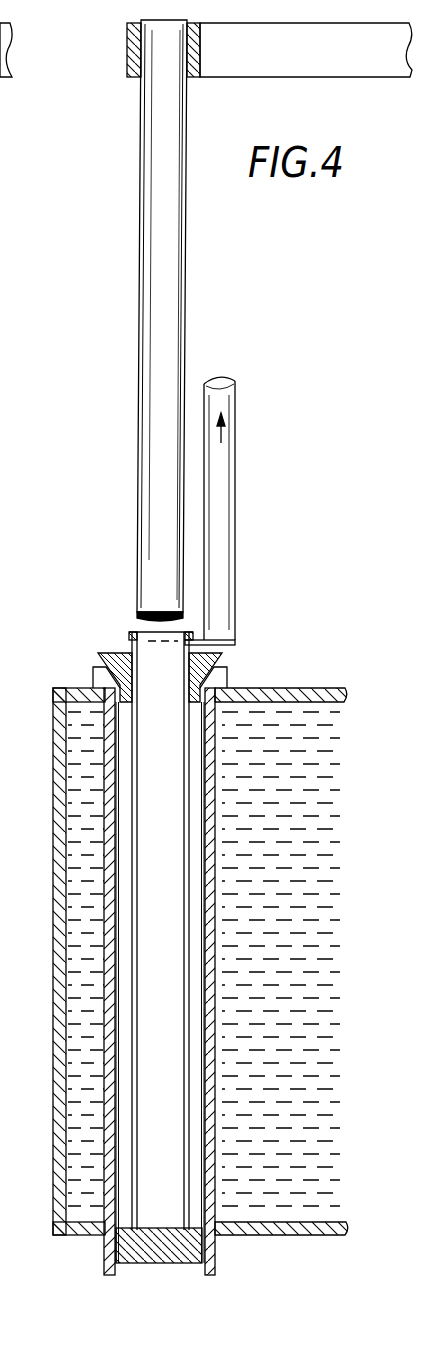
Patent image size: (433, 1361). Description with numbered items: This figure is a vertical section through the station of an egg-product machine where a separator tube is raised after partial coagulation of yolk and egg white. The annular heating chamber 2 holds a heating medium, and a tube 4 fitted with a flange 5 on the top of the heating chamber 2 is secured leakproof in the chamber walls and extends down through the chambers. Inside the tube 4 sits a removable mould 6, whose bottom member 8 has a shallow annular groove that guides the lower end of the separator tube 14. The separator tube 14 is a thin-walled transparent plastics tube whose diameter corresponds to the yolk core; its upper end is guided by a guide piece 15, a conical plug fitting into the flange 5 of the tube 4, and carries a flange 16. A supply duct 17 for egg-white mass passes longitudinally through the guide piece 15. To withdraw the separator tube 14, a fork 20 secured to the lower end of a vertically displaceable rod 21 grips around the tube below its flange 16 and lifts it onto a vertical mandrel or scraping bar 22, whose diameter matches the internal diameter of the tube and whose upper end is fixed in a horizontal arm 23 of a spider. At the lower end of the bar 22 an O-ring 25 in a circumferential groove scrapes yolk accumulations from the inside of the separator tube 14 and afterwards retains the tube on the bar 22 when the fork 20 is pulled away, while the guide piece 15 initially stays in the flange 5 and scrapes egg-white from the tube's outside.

The annular heating chamber 2 is at (82, 927).
The tube 4 is at (110, 1250).
The flange 5 is at (222, 673).
The removable mould 6 is at (203, 978).
The bottom member 8 is at (185, 1250).
The separator tube 14 is at (134, 812).
The guide piece 15 is at (128, 654).
The flange 16 is at (129, 633).
The supply duct 17 is at (110, 670).
The fork 20 is at (228, 643).
The vertically displaceable rod 21 is at (225, 410).
The scraping bar 22 is at (155, 447).
The horizontal arm 23 is at (274, 63).
The O-ring 25 is at (153, 609).